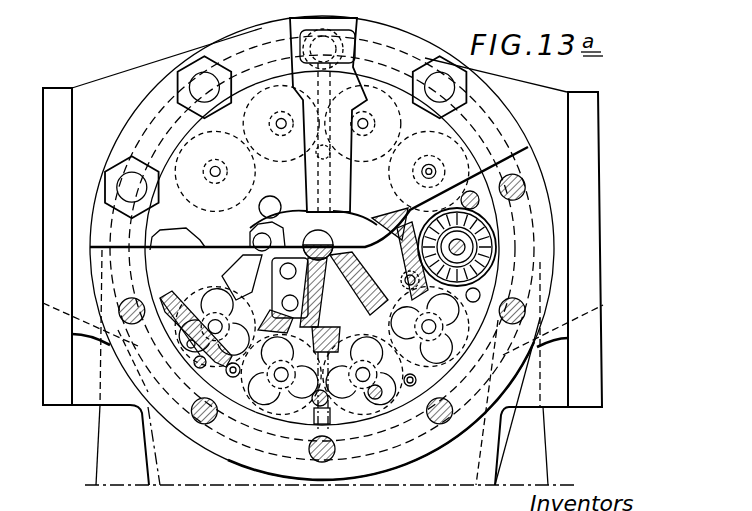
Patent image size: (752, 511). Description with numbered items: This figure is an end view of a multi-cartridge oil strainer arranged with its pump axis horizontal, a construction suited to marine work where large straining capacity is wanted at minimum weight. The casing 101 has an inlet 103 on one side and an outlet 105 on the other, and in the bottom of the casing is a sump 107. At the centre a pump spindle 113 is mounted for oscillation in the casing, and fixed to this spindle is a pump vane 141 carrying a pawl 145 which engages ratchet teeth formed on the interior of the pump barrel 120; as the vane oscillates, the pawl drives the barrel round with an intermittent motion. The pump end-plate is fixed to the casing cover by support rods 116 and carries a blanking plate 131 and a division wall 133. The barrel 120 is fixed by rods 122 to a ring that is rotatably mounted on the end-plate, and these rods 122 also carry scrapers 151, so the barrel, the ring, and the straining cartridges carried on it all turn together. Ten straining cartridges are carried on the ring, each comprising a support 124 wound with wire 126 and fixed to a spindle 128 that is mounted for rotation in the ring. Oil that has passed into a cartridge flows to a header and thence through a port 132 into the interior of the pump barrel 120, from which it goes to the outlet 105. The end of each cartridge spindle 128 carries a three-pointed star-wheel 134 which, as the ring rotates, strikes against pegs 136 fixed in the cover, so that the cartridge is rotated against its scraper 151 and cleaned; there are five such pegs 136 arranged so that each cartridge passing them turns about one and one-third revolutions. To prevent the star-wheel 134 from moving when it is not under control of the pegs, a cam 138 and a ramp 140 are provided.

The casing 101 is at (510, 114).
The inlet 103 is at (50, 228).
The outlet 105 is at (586, 162).
The sump 107 is at (224, 457).
The pump spindle 113 is at (313, 238).
The support rods 116 is at (425, 245).
The pump barrel 120 is at (256, 284).
The rods 122 is at (470, 376).
The support 124 is at (495, 258).
The wire 126 is at (146, 132).
The spindle 128 is at (465, 246).
The blanking plate 131 is at (331, 240).
The port 132 is at (355, 287).
The division wall 133 is at (290, 288).
The star-wheel 134 is at (287, 390).
The pegs 136 is at (263, 392).
The cam 138 is at (198, 354).
The ramp 140 is at (266, 256).
The pump vane 141 is at (304, 344).
The pawl 145 is at (427, 280).
The scrapers 151 is at (483, 206).